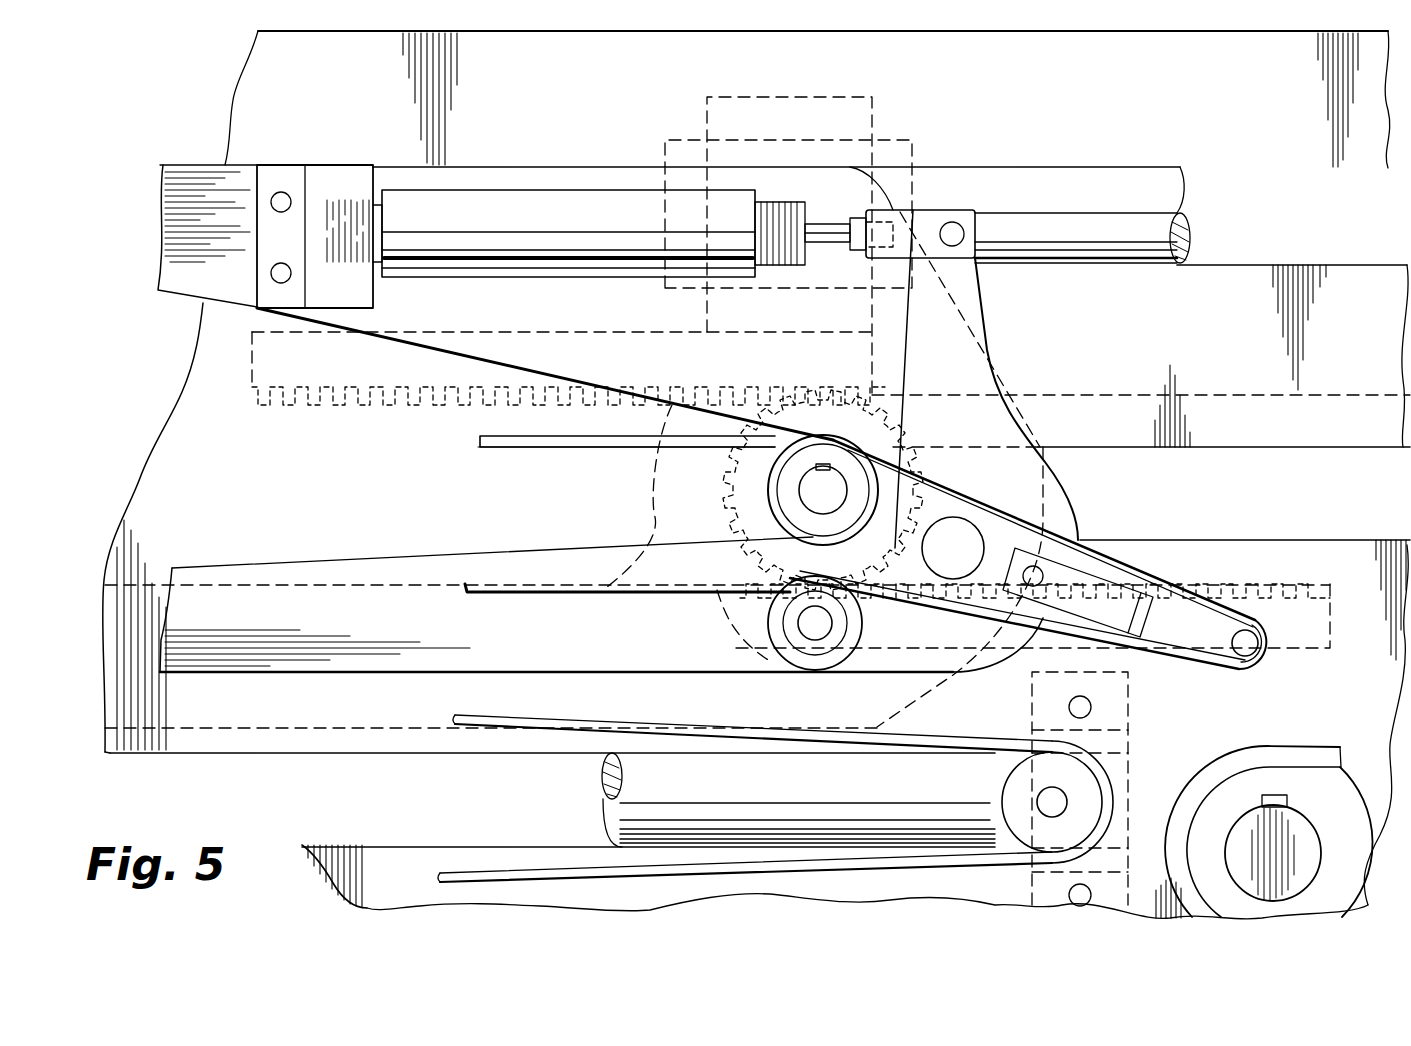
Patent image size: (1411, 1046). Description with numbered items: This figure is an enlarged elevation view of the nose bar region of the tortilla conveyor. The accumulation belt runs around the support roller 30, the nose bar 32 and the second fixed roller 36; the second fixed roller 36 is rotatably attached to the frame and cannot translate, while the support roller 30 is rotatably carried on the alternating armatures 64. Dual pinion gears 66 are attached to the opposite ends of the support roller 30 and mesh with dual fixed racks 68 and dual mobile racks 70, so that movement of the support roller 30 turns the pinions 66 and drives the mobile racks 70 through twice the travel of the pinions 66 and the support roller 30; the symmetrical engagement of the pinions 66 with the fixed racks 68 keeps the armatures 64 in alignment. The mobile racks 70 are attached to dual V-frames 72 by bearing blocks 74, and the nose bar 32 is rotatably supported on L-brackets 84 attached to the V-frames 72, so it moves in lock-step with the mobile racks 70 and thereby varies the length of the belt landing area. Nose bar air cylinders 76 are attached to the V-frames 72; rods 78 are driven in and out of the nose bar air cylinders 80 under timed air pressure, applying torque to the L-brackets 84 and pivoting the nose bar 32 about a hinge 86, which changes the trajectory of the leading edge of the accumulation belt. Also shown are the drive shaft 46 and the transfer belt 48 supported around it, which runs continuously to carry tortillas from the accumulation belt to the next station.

The support roller 30 is at (787, 493).
The nose bar 32 is at (1252, 630).
The second fixed roller 36 is at (996, 787).
The drive shaft 46 is at (1312, 826).
The transfer belt 48 is at (1330, 746).
The alternating armatures 64 is at (364, 673).
The pinion gears 66 is at (716, 598).
The fixed racks 68 is at (1323, 580).
The mobile racks 70 is at (426, 405).
The V-frames 72 is at (1066, 497).
The bearing blocks 74 is at (852, 92).
The nose bar air cylinders 76 is at (513, 262).
The rods 78 is at (932, 210).
The nose bar air cylinder 80 is at (583, 190).
The L-brackets 84 is at (988, 288).
The hinge 86 is at (953, 546).